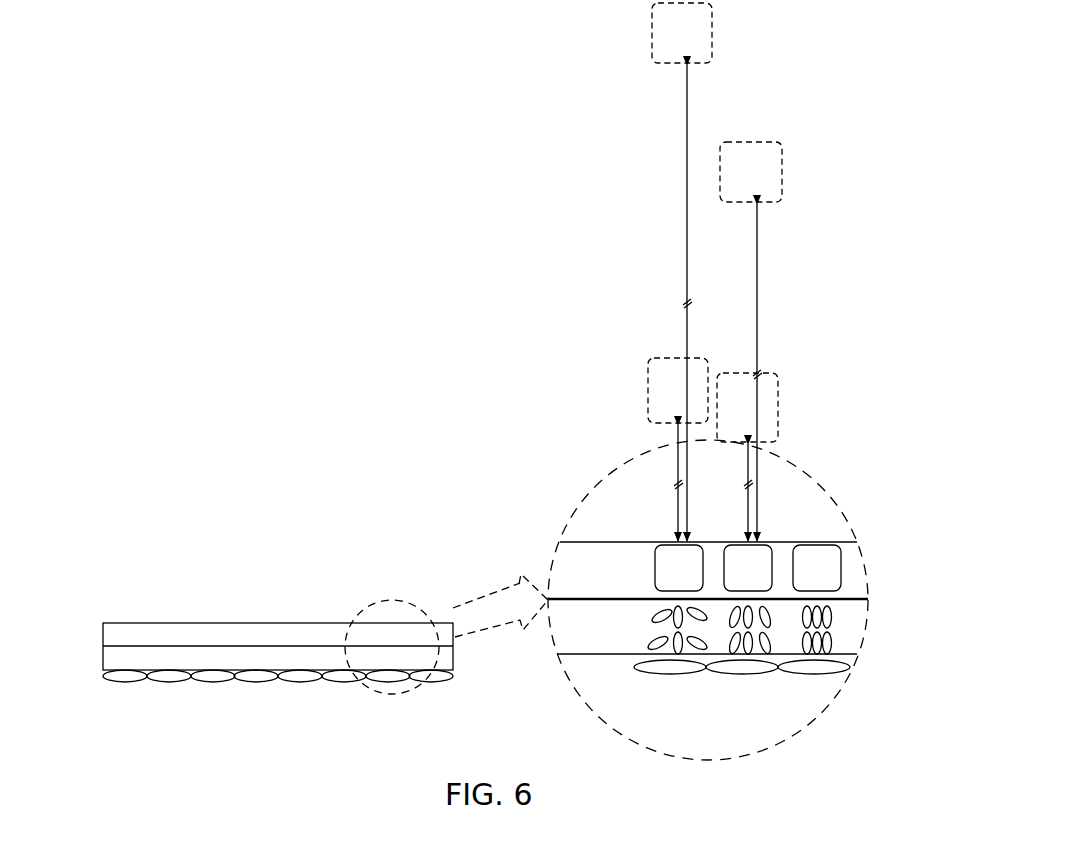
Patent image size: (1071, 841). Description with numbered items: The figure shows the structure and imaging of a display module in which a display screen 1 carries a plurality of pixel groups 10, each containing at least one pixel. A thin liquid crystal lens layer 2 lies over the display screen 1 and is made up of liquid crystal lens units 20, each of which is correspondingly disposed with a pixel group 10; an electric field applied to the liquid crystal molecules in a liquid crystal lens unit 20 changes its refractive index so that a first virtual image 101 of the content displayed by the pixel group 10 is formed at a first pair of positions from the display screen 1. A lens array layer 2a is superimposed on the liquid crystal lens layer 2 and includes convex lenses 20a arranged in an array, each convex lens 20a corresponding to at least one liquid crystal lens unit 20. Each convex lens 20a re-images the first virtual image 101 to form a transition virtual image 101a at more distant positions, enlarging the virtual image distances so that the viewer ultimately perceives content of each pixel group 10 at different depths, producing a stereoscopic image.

The display screen 1 is at (157, 622).
The liquid crystal lens layer 2 is at (137, 653).
The lens array layer 2a is at (233, 675).
The pixel group 10 is at (831, 549).
The liquid crystal lens unit 20 is at (832, 634).
The convex lens 20a is at (742, 668).
The first virtual image 101 is at (782, 410).
The transition virtual image 101a is at (785, 183).